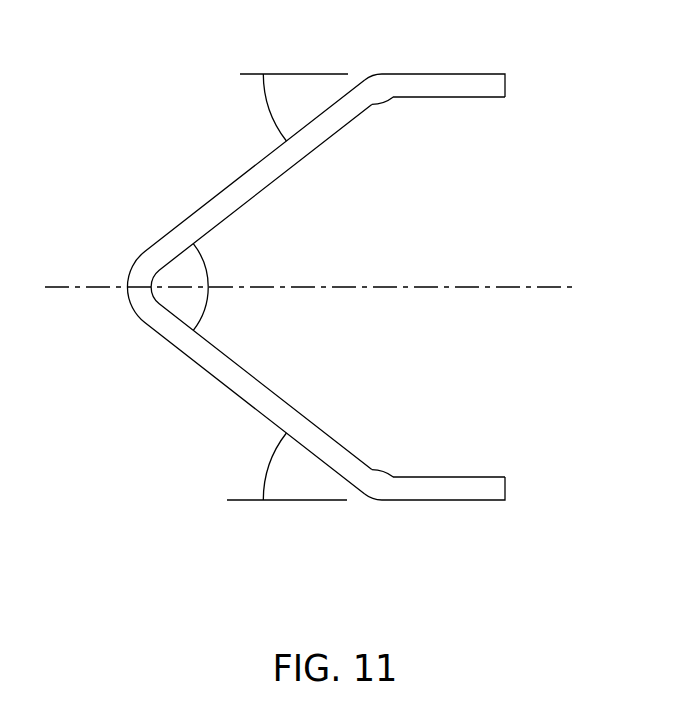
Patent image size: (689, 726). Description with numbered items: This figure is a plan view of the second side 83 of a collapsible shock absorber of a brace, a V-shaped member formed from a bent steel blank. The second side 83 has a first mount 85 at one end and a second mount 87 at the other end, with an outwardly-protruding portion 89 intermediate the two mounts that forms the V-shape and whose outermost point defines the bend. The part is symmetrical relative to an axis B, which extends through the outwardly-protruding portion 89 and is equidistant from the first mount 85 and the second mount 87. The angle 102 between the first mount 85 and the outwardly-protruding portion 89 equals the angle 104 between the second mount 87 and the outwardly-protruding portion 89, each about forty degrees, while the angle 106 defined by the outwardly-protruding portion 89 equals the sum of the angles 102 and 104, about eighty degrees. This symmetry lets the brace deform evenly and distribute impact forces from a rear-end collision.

The second side 83 is at (266, 285).
The first mount 85 is at (450, 490).
The second mount 87 is at (438, 85).
The outwardly-protruding portion 89 is at (282, 413).
The angle 102 is at (267, 467).
The angle 104 is at (268, 110).
The angle 106 is at (202, 317).
The axis B is at (473, 290).